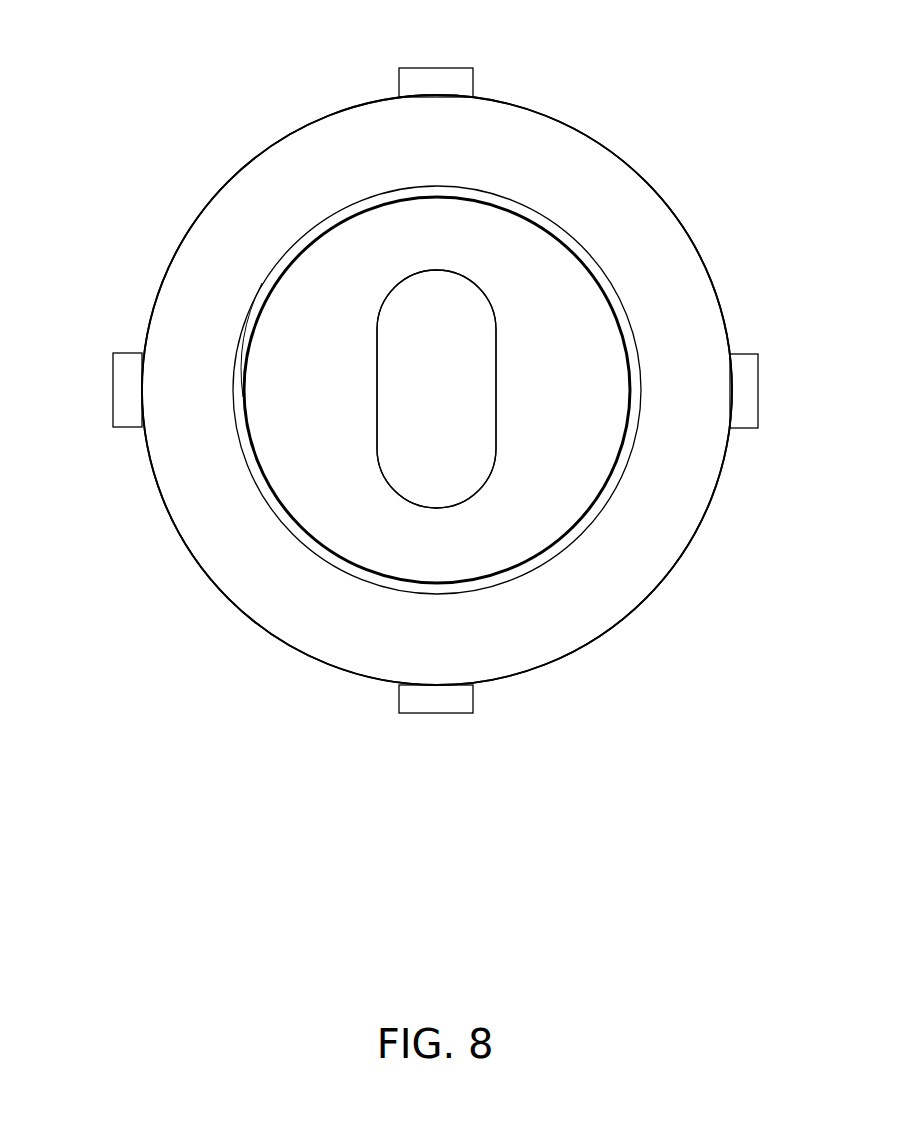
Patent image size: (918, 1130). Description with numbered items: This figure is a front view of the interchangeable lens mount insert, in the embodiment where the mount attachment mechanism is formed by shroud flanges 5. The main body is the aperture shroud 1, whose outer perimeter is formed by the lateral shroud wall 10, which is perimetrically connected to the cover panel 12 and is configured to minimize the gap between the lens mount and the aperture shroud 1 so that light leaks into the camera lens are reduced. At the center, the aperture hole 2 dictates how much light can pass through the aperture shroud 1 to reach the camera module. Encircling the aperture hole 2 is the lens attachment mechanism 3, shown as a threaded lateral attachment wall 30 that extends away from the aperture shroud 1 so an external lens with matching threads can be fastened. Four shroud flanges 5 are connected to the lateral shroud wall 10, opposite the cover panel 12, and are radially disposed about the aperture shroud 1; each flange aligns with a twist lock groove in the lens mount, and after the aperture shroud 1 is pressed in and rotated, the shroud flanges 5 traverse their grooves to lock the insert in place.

The aperture shroud 1 is at (696, 118).
The lateral shroud wall 10 is at (610, 628).
The lens attachment mechanism 3 is at (200, 400).
The lateral attachment wall 30 is at (263, 492).
The aperture hole 2 is at (419, 482).
The cover panel 12 is at (397, 268).
The shroud flanges 5 is at (443, 77).